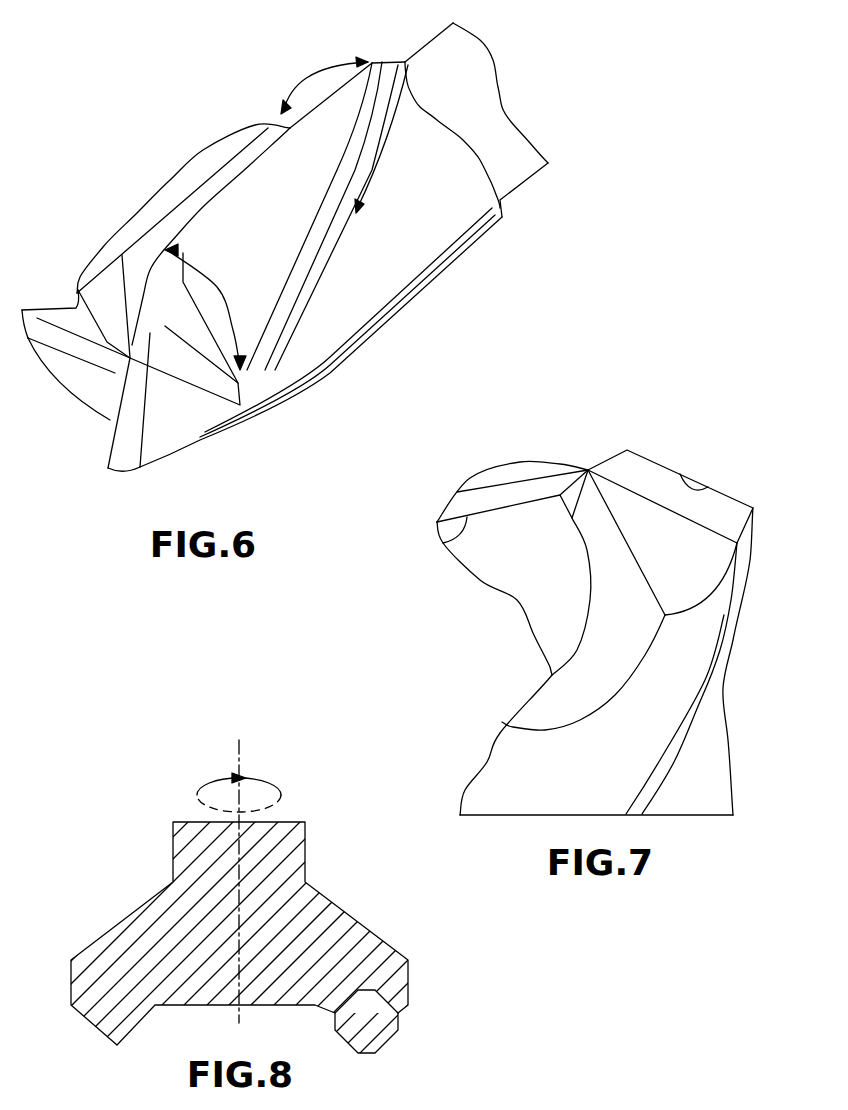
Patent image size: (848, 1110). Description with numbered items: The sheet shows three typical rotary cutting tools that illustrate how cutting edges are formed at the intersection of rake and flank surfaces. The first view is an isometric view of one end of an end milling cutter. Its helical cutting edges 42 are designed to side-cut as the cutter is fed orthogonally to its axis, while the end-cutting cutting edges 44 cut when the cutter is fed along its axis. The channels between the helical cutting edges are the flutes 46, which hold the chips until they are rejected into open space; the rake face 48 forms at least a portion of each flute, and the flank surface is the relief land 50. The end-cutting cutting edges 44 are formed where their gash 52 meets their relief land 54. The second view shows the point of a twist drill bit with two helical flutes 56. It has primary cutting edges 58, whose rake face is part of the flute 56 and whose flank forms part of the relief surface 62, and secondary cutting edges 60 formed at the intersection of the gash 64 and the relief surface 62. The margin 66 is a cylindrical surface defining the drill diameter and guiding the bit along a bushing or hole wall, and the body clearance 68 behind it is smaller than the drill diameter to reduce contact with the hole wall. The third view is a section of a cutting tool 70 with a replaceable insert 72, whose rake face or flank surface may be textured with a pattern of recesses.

In FIG. 6, the helical cutting edges 42 is at (397, 112).
In FIG. 6, the end-cutting cutting edges 44 is at (77, 338).
In FIG. 6, the flutes 46 is at (312, 67).
In FIG. 6, the rake face 48 is at (202, 157).
In FIG. 6, the relief land 50 is at (150, 220).
In FIG. 6, the gash 52 is at (157, 300).
In FIG. 6, the relief land 54 is at (123, 297).
In FIG. 7, the helical flutes 56 is at (518, 600).
In FIG. 7, the primary cutting edges 58 is at (443, 543).
In FIG. 7, the secondary cutting edges 60 is at (570, 467).
In FIG. 7, the relief surface 62 is at (503, 493).
In FIG. 7, the gash 64 is at (563, 492).
In FIG. 7, the margin 66 is at (732, 625).
In FIG. 7, the body clearance 68 is at (487, 762).
In FIG. 8, the cutting tool 70 is at (137, 925).
In FIG. 8, the insert 72 is at (388, 1035).